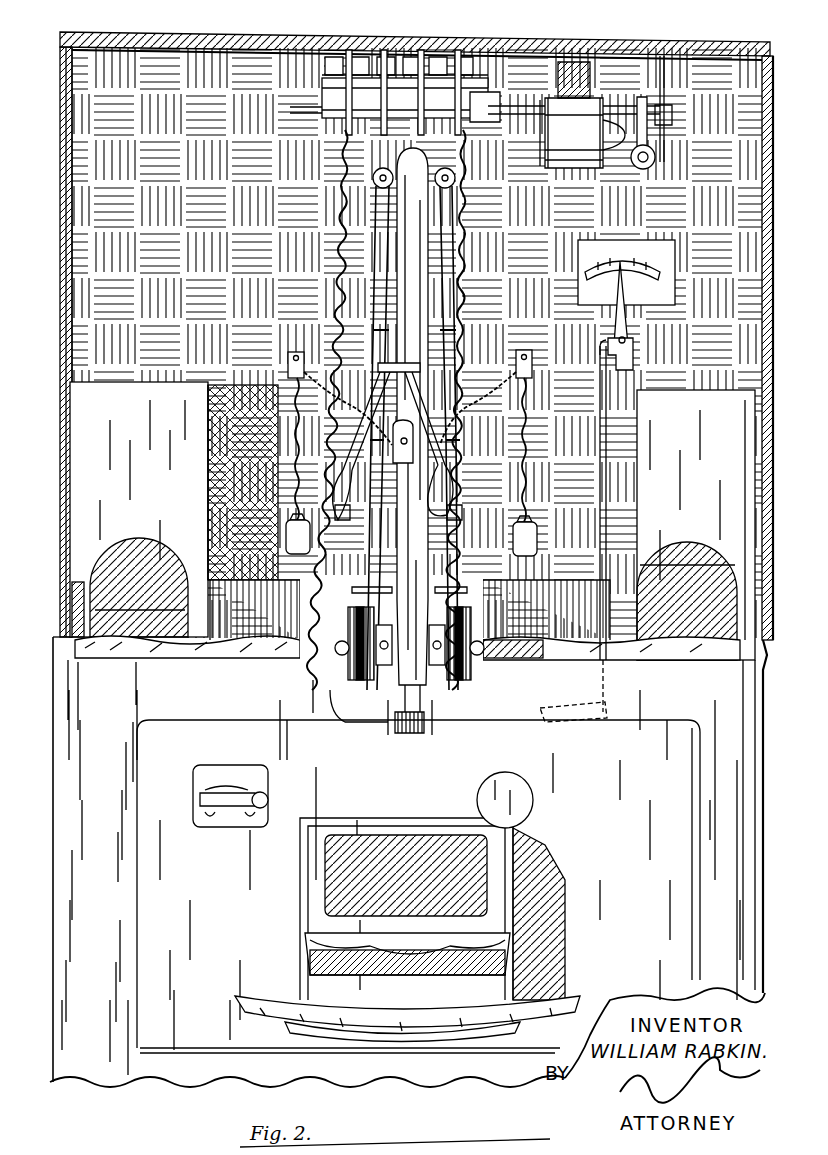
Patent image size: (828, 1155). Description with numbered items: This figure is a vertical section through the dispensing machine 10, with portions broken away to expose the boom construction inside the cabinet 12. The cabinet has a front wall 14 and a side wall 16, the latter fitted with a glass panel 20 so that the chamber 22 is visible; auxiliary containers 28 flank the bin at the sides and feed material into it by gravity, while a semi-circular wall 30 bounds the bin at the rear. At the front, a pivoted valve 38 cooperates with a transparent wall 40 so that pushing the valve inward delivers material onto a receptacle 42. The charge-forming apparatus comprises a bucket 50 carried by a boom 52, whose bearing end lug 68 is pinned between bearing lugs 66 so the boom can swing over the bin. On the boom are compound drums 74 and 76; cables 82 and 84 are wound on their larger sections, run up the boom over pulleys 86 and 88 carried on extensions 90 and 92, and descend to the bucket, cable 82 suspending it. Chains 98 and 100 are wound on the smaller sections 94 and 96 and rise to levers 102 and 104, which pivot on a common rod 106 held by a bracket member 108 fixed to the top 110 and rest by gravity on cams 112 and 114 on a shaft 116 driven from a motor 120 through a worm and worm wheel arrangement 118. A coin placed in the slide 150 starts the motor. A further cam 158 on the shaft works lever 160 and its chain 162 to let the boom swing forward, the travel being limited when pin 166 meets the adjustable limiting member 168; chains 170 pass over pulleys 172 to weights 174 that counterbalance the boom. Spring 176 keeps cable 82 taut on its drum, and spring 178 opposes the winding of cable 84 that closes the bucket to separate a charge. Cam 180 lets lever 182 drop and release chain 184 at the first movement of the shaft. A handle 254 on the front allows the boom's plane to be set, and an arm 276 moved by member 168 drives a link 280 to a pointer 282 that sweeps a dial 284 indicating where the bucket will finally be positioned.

The dispensing machine 10 is at (83, 23).
The cabinet 12 is at (58, 128).
The front wall 14 is at (72, 918).
The side wall 16 is at (62, 334).
The panel of glass 20 is at (60, 266).
The chamber 22 is at (702, 120).
The auxiliary containers 28 is at (82, 492).
The semi-circular wall 30 is at (242, 645).
The valve 38 is at (470, 960).
The transparent wall 40 is at (480, 893).
The receptacle 42 is at (574, 1000).
The bucket 50 is at (438, 405).
The boom 52 is at (394, 724).
The bearing lugs 66 is at (400, 738).
The bearing end lug 68 is at (399, 730).
The compound pulley or drum 74 is at (345, 702).
The compound pulley or drum 76 is at (492, 668).
The cable 82 is at (362, 556).
The cable 84 is at (455, 580).
The pulley 86 is at (375, 240).
The pulley 88 is at (452, 245).
The extension 90 is at (375, 180).
The extension 92 is at (455, 178).
The smaller section 94 is at (392, 690).
The smaller section 96 is at (452, 692).
The chain 98 is at (358, 580).
The chain 100 is at (458, 600).
The lever 102 is at (408, 57).
The lever 104 is at (500, 42).
The common rod 106 is at (330, 58).
The bracket member 108 is at (345, 56).
The top 110 is at (203, 38).
The cam 112 is at (421, 152).
The cam 114 is at (556, 40).
The shaft 116 is at (300, 111).
The worm and worm wheel arrangement 118 is at (630, 164).
The motor 120 is at (569, 168).
The slide 150 is at (230, 778).
The cam 158 is at (475, 122).
The lever 160 is at (440, 57).
The chain 162 is at (424, 186).
The forwardly extending pin 166 is at (430, 724).
The adjustable limiting member 168 is at (396, 760).
The chains 170 is at (296, 425).
The pulleys 172 is at (288, 365).
The weights 174 is at (290, 524).
The spring 176 is at (372, 372).
The spring 178 is at (465, 438).
The cam 180 is at (332, 120).
The lever 182 is at (378, 57).
The chain 184 is at (318, 642).
The handle 254 is at (478, 800).
The arm 276 is at (562, 722).
The link 280 is at (608, 518).
The pointer 282 is at (625, 322).
The dial 284 is at (650, 274).